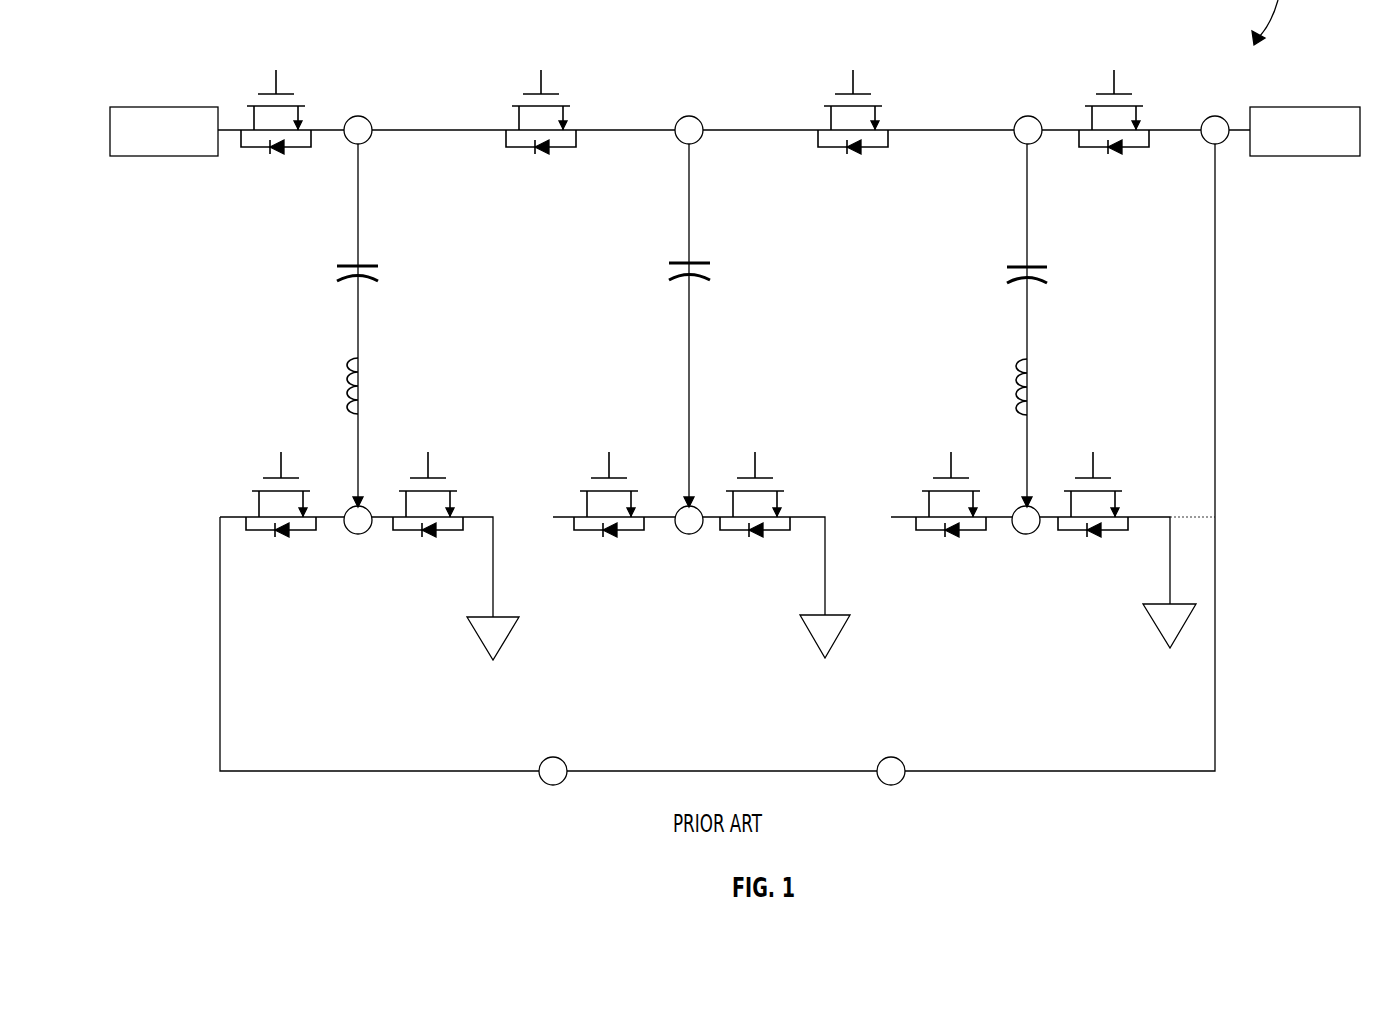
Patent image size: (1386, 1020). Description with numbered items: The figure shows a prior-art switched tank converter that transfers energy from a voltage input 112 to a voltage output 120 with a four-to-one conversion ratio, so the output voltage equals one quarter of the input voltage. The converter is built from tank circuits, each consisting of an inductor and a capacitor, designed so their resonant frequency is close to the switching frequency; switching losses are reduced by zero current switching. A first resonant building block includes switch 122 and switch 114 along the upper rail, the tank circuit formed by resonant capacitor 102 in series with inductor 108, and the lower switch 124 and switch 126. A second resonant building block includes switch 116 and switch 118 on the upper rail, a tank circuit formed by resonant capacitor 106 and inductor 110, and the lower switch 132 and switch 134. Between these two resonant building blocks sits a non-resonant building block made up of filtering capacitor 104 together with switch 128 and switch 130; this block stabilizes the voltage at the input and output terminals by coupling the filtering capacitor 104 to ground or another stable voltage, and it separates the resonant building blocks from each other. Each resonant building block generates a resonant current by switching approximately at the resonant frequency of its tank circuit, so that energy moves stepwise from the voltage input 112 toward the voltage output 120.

The resonant capacitor 102 is at (333, 266).
The filtering capacitor 104 is at (663, 268).
The resonant capacitor 106 is at (1003, 269).
The inductor 108 is at (365, 352).
The inductor 110 is at (1037, 347).
The voltage input 112 is at (197, 149).
The switch 114 is at (598, 52).
The switch 116 is at (908, 52).
The switch 118 is at (1170, 53).
The voltage output 120 is at (1343, 149).
The switch 122 is at (330, 52).
The switch 124 is at (336, 582).
The switch 126 is at (485, 582).
The switch 128 is at (666, 583).
The switch 130 is at (811, 583).
The switch 132 is at (1006, 583).
The switch 134 is at (1158, 583).